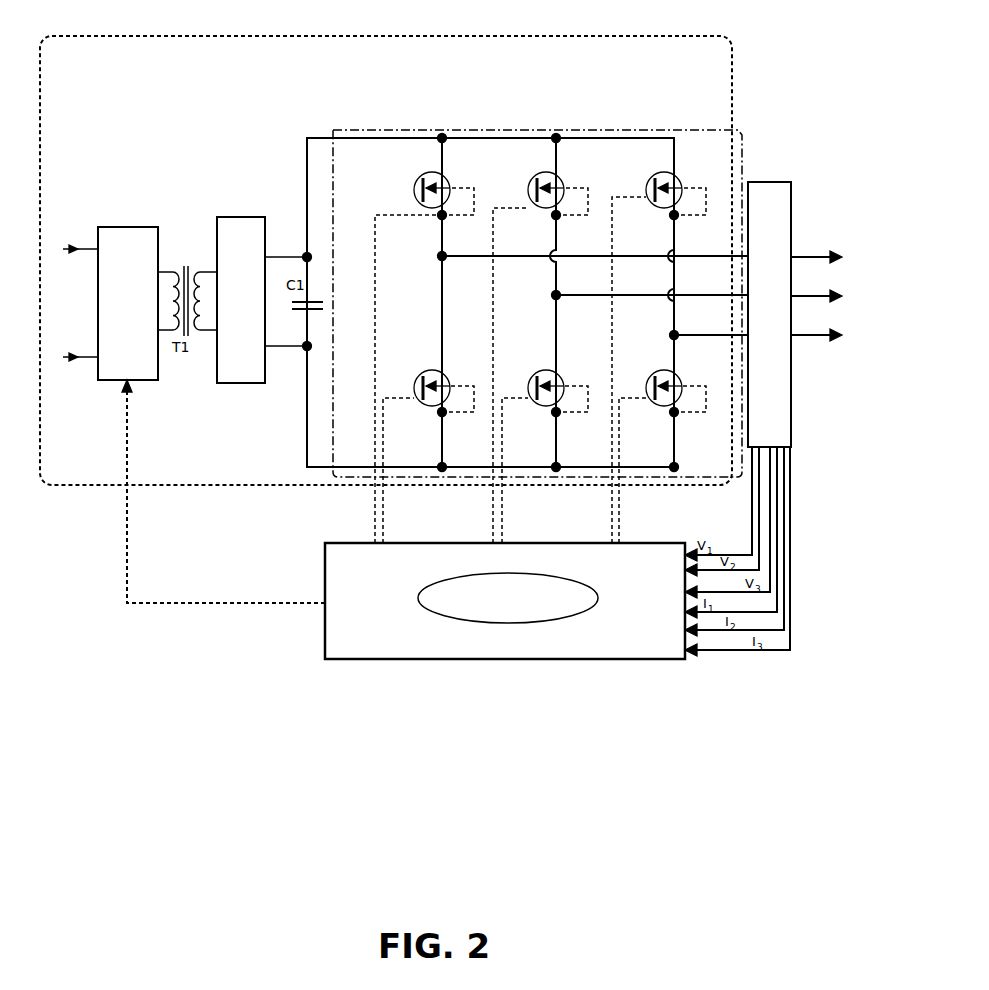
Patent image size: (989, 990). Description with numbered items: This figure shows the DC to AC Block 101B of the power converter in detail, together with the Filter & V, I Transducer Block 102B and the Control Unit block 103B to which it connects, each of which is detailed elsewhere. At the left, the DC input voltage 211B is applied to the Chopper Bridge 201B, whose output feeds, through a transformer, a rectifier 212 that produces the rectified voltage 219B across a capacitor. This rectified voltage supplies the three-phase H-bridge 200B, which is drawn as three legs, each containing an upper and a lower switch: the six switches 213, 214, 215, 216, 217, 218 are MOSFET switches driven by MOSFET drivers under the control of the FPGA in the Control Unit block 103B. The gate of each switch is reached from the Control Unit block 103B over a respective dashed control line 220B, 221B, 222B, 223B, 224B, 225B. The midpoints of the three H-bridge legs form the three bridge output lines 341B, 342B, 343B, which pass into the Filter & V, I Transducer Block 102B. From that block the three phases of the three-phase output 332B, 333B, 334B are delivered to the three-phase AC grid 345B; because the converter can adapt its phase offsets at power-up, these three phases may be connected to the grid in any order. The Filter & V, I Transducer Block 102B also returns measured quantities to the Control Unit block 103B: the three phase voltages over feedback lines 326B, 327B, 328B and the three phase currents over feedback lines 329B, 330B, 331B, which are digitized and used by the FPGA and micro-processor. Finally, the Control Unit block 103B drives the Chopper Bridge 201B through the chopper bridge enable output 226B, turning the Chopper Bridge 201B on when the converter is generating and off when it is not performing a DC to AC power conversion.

The DC to AC Block 101B is at (694, 37).
The Chopper Bridge 201B is at (132, 227).
The DC input 211B is at (73, 222).
The rectifier 212 is at (230, 217).
The rectified voltage VRECD 219B is at (344, 127).
The 3-phase H-bridge 200B is at (524, 303).
The switch SW1 213 is at (420, 178).
The switch SW3 214 is at (534, 178).
The switch SW5 215 is at (650, 178).
The switch SW2 216 is at (423, 374).
The switch SW4 217 is at (537, 374).
The switch SW6 218 is at (655, 374).
The control line SW1 220B is at (375, 512).
The control line SW2 221B is at (383, 512).
The control line SW3 222B is at (493, 512).
The control line SW4 223B is at (502, 512).
The control line SW5 224B is at (612, 512).
The control line SW6 225B is at (619, 512).
The H-bridge output phase 1 341B is at (702, 260).
The H-bridge output phase 2 342B is at (702, 299).
The H-bridge output phase 3 343B is at (702, 339).
The Filter & V, I Transducer Block 102B is at (772, 182).
The first phase of the 3-phase output 332B is at (804, 255).
The second phase of the 3-phase output 333B is at (804, 294).
The third phase of the 3-phase output 334B is at (804, 333).
The 3-phase AC grid 345B is at (848, 382).
The voltage feedback V1 326B is at (752, 507).
The voltage feedback V2 327B is at (685, 570).
The voltage feedback V3 328B is at (685, 592).
The current feedback I1 329B is at (685, 612).
The current feedback I2 330B is at (685, 630).
The current feedback I3 331B is at (720, 652).
The Control Unit block 103B is at (415, 660).
The chopper bridge enable output 226B is at (222, 606).